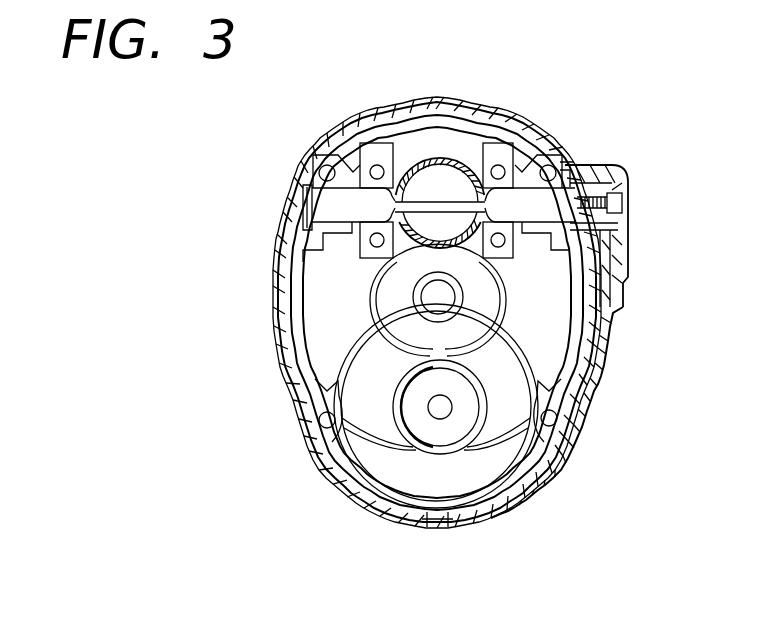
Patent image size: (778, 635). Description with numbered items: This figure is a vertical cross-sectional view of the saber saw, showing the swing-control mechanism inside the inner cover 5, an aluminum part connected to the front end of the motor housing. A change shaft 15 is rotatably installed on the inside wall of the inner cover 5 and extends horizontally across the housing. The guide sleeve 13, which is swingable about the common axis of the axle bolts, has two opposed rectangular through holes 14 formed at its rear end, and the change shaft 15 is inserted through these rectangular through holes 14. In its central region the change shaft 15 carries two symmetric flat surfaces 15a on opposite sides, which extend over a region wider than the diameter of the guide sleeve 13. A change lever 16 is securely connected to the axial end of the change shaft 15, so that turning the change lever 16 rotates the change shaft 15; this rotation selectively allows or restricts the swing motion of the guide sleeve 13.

The inner cover 5 is at (370, 108).
The guide sleeve 13 is at (480, 110).
The rectangular through holes 14 is at (345, 198).
The change shaft 15 is at (303, 185).
The flat surfaces 15a is at (434, 203).
The change lever 16 is at (632, 240).